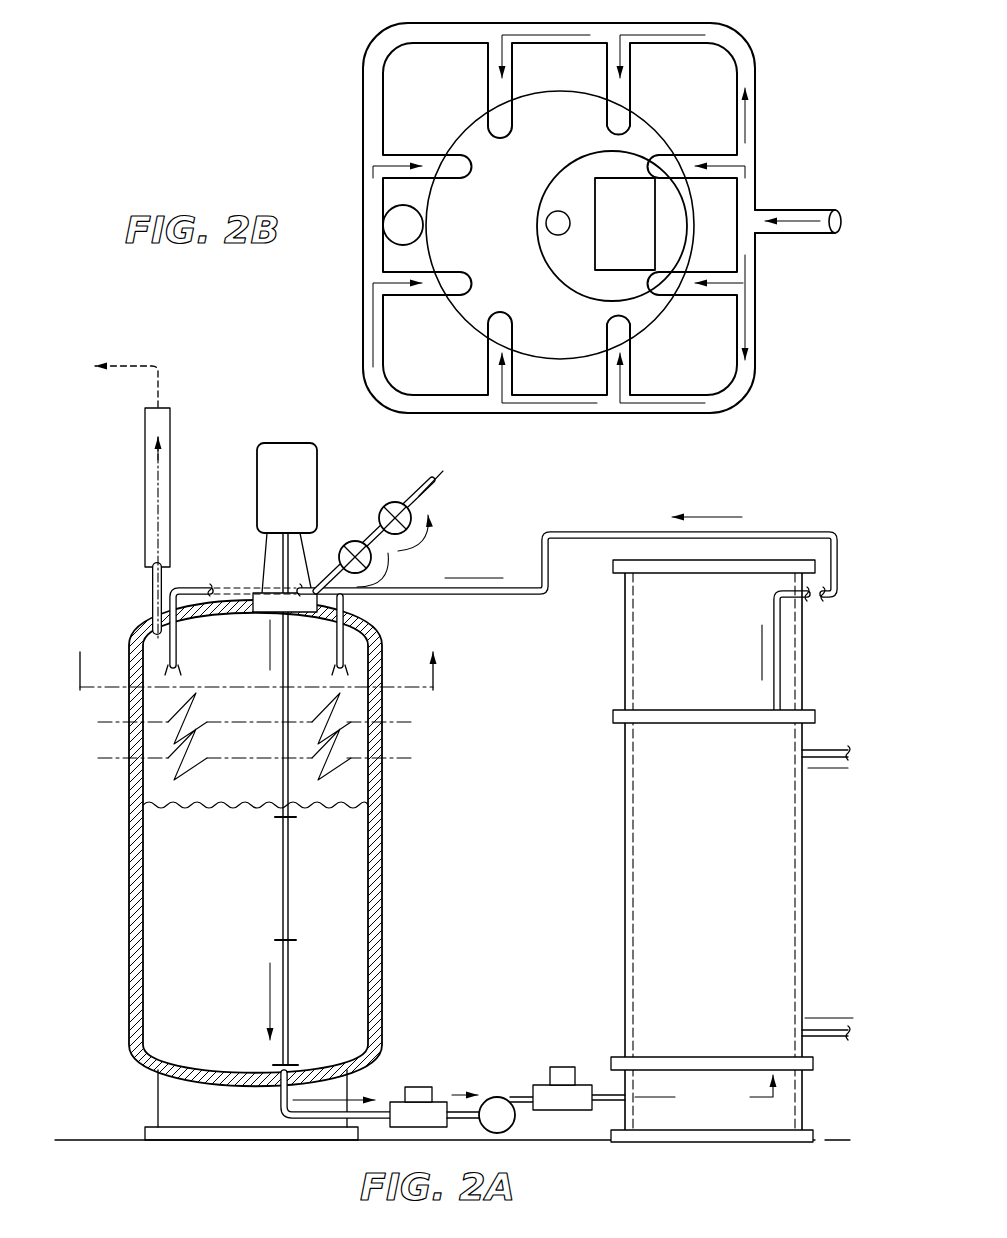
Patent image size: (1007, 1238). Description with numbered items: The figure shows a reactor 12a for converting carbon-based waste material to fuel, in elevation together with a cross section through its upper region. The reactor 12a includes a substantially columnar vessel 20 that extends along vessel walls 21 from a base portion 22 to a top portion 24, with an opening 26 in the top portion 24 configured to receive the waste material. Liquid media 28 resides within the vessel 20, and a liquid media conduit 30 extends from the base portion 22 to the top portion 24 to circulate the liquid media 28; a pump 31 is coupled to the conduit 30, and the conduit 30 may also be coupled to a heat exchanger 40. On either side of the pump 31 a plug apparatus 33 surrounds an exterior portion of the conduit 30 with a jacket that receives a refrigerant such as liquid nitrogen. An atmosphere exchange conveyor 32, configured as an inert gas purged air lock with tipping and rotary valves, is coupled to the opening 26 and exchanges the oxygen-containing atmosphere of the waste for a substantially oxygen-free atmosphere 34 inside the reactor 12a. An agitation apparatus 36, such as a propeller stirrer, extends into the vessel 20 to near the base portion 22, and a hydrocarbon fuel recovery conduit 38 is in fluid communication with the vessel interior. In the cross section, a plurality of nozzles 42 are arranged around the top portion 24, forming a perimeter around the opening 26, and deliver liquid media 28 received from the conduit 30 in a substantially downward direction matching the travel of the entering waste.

In FIG. 2A, the reactor 12a is at (90, 400).
In FIG. 2A, the vessel 20 is at (253, 843).
In FIG. 2B, the vessel walls 21 is at (363, 100).
In FIG. 2A, the vessel walls 21 is at (382, 882).
In FIG. 2A, the base portion 22 is at (158, 1075).
In FIG. 2A, the top portion 24 is at (222, 598).
In FIG. 2A, the opening 26 is at (257, 628).
In FIG. 2A, the liquid media 28 is at (335, 982).
In FIG. 2A, the liquid media conduit 30 is at (320, 1118).
In FIG. 2A, the pump 31 is at (495, 1097).
In FIG. 2A, the atmosphere exchange conveyor 32 is at (360, 527).
In FIG. 2A, the plug apparatus 33 is at (400, 1115).
In FIG. 2B, the substantially oxygen-free atmosphere 34 is at (560, 325).
In FIG. 2A, the substantially oxygen-free atmosphere 34 is at (205, 653).
In FIG. 2B, the agitation apparatus 36 is at (545, 183).
In FIG. 2A, the agitation apparatus 36 is at (257, 470).
In FIG. 2B, the hydrocarbon fuel recovery conduit 38 is at (405, 243).
In FIG. 2A, the hydrocarbon fuel recovery conduit 38 is at (172, 427).
In FIG. 2A, the heat exchanger 40 is at (592, 802).
In FIG. 2B, the nozzles 42 is at (398, 153).
In FIG. 2A, the nozzles 42 is at (333, 675).